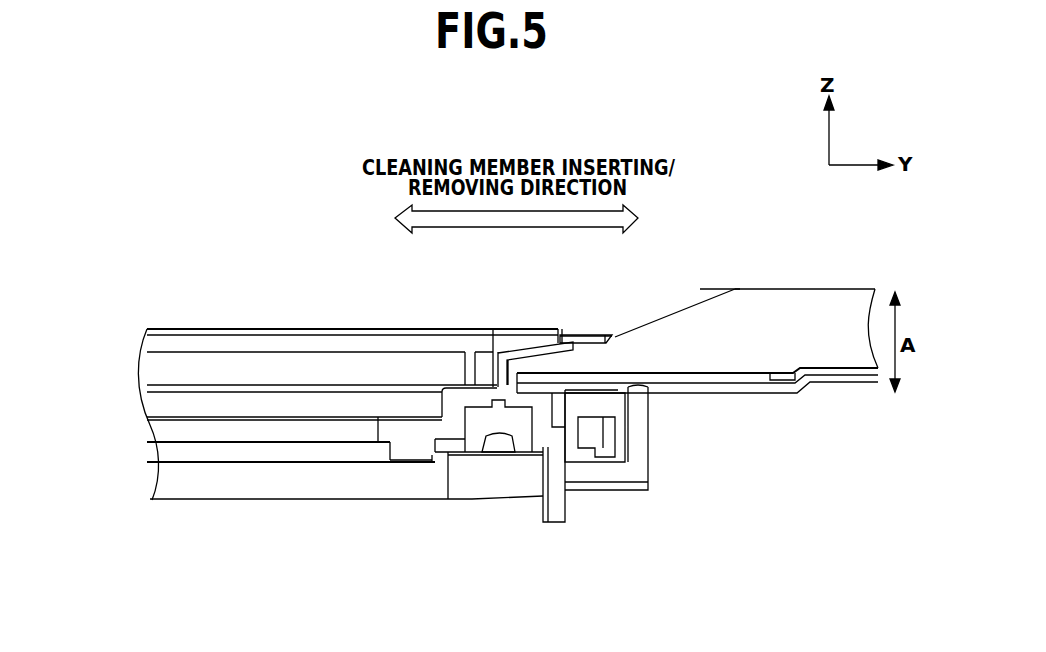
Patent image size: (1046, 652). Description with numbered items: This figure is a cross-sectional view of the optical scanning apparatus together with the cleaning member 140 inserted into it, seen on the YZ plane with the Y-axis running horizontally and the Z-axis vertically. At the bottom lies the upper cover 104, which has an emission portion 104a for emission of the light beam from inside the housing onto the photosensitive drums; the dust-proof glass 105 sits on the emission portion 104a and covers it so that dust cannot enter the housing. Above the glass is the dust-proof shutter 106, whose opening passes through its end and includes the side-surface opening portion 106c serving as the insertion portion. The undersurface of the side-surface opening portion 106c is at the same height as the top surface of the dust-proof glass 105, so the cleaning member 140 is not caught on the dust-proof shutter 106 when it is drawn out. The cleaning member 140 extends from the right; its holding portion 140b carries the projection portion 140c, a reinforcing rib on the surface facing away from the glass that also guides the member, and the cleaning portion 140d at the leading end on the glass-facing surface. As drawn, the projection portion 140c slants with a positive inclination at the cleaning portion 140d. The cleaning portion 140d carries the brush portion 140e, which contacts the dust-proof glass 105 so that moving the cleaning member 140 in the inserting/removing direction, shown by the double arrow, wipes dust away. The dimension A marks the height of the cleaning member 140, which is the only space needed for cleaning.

The upper cover 104 is at (637, 437).
The emission portion 104a is at (170, 432).
The dust-proof glass 105 is at (160, 403).
The dust-proof shutter 106 is at (322, 340).
The side-surface opening portion 106c is at (567, 337).
The cleaning member 140 is at (788, 275).
The holding portion 140b is at (832, 320).
The projection portion 140c is at (693, 340).
The cleaning portion 140d is at (646, 343).
The brush portion 140e is at (738, 385).